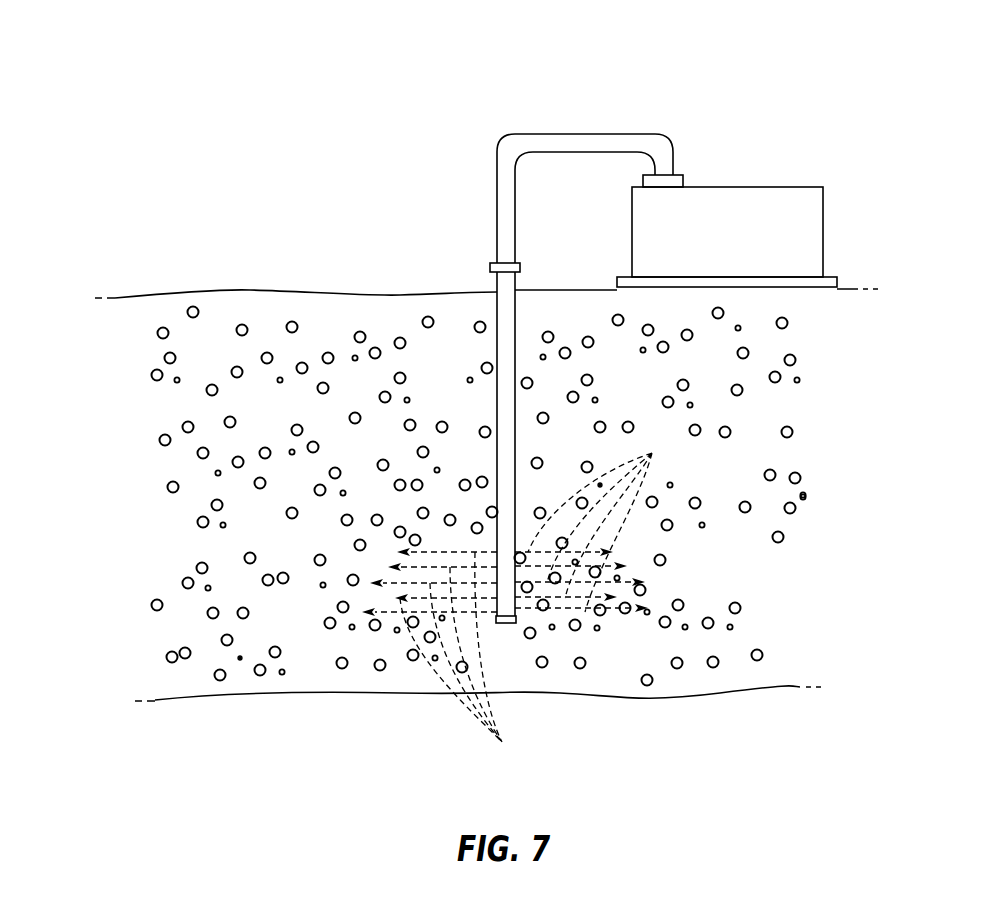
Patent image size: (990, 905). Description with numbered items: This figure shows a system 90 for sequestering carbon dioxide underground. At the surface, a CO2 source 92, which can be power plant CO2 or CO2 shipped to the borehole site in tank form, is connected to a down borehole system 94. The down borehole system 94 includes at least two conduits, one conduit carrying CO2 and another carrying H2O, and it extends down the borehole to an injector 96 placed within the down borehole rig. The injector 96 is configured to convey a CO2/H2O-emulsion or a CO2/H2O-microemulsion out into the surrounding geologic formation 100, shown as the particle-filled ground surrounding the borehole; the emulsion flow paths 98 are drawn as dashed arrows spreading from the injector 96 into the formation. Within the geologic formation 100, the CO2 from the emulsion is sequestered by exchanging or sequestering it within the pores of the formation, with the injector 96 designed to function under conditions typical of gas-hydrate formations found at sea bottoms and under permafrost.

The system 90 is at (867, 108).
The CO2 source 92 is at (800, 236).
The down borehole system 94 is at (497, 282).
The injector 96 is at (506, 623).
The flow paths of injected fluid 98 is at (522, 599).
The geologic formation 100 is at (287, 323).